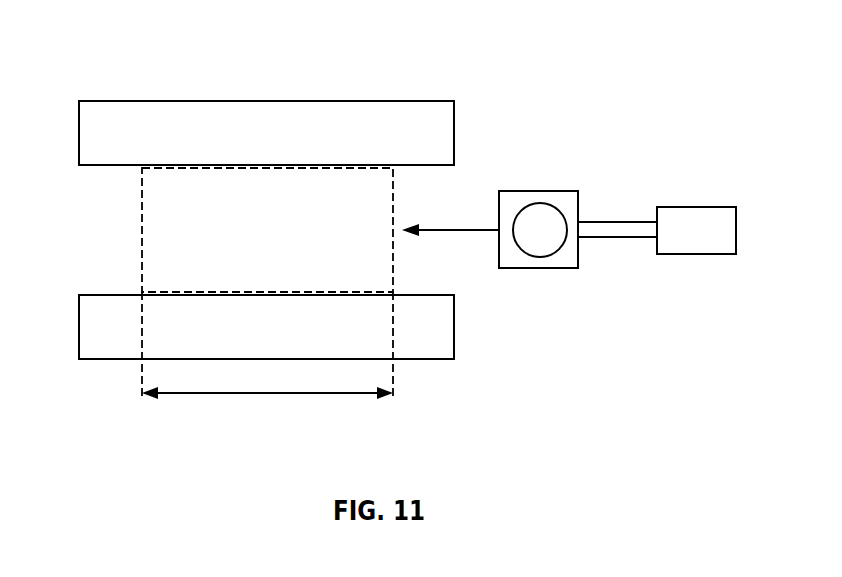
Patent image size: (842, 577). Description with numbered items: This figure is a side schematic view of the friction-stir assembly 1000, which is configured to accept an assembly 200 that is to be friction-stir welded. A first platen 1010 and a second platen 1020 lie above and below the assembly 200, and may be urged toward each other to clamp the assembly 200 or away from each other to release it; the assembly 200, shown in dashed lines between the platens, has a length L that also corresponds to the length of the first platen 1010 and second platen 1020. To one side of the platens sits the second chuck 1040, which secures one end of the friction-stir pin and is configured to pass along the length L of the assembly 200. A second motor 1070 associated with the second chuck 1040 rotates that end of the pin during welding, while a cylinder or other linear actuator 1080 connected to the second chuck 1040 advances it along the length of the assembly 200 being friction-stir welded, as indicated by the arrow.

The friction-stir assembly 1000 is at (332, 64).
The first platen 1010 is at (177, 118).
The second platen 1020 is at (183, 332).
The assembly 200 is at (140, 195).
The length L is at (265, 395).
The second chuck 1040 is at (538, 191).
The second motor 1070 is at (540, 230).
The linear actuator 1080 is at (695, 255).